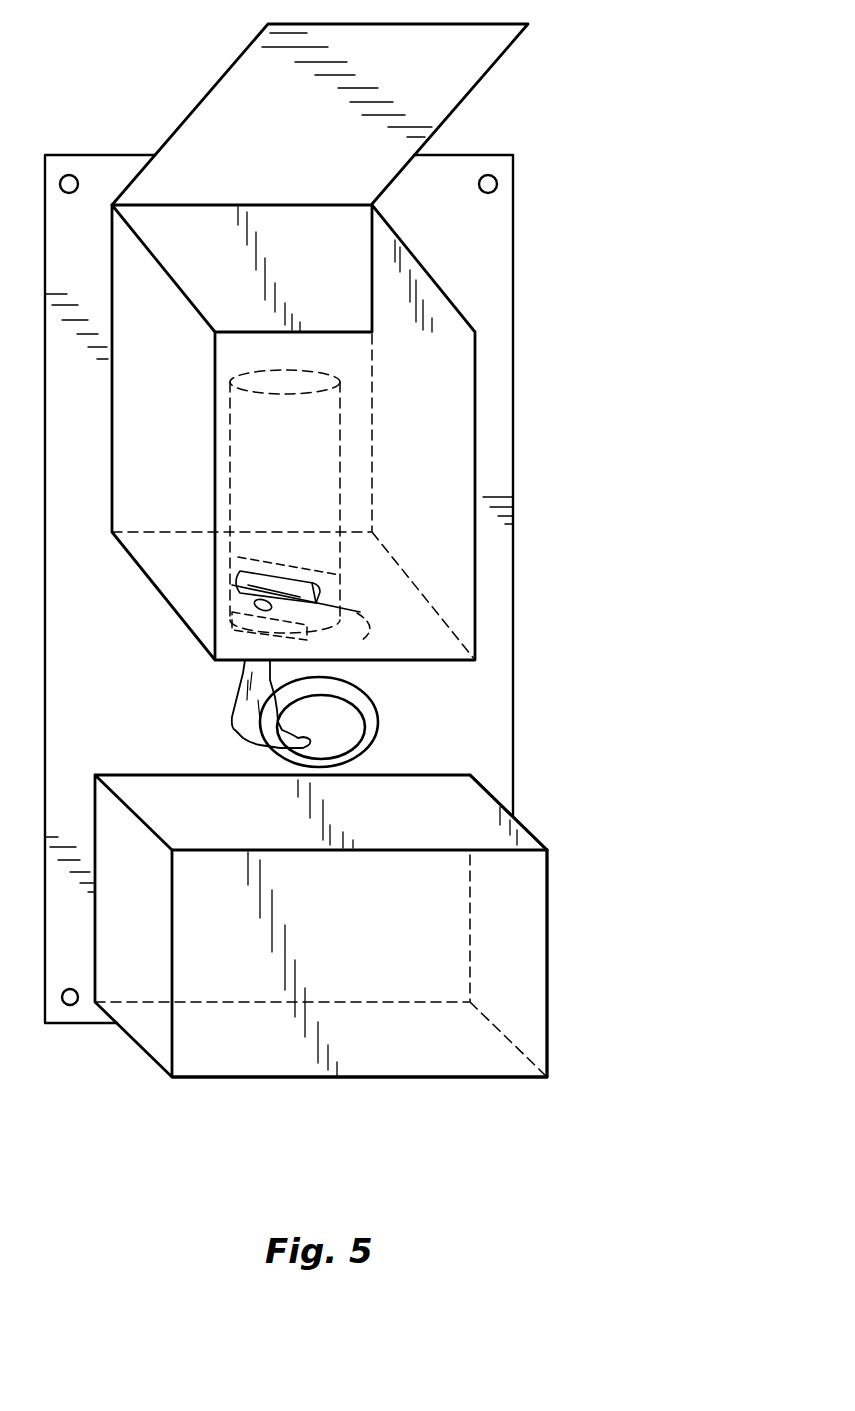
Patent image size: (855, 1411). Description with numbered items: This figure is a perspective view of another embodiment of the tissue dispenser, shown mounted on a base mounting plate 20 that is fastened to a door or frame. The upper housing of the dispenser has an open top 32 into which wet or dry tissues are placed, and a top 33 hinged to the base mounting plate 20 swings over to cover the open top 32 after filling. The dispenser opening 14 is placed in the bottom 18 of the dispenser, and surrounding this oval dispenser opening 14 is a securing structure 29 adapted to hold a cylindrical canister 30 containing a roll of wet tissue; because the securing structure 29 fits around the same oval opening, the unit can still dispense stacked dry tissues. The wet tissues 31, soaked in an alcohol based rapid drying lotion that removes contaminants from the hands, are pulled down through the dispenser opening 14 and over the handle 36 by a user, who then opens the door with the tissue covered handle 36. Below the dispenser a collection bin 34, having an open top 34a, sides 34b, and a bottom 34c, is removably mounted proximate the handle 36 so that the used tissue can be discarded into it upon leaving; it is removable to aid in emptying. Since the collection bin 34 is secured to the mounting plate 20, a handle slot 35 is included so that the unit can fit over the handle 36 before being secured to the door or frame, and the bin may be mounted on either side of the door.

The dispenser opening 14 is at (352, 630).
The bottom 18 is at (447, 653).
The base mounting plate 20 is at (495, 212).
The securing structure 29 is at (300, 643).
The cylindrical canister 30 is at (305, 458).
The wet tissues 31 is at (232, 708).
The open top 32 is at (390, 297).
The top 33 is at (442, 81).
The collection bin 34 is at (512, 907).
The open top 34a is at (487, 832).
The sides 34b is at (513, 968).
The bottom 34c is at (432, 1053).
The handle slot 35 is at (373, 707).
The handle 36 is at (343, 728).